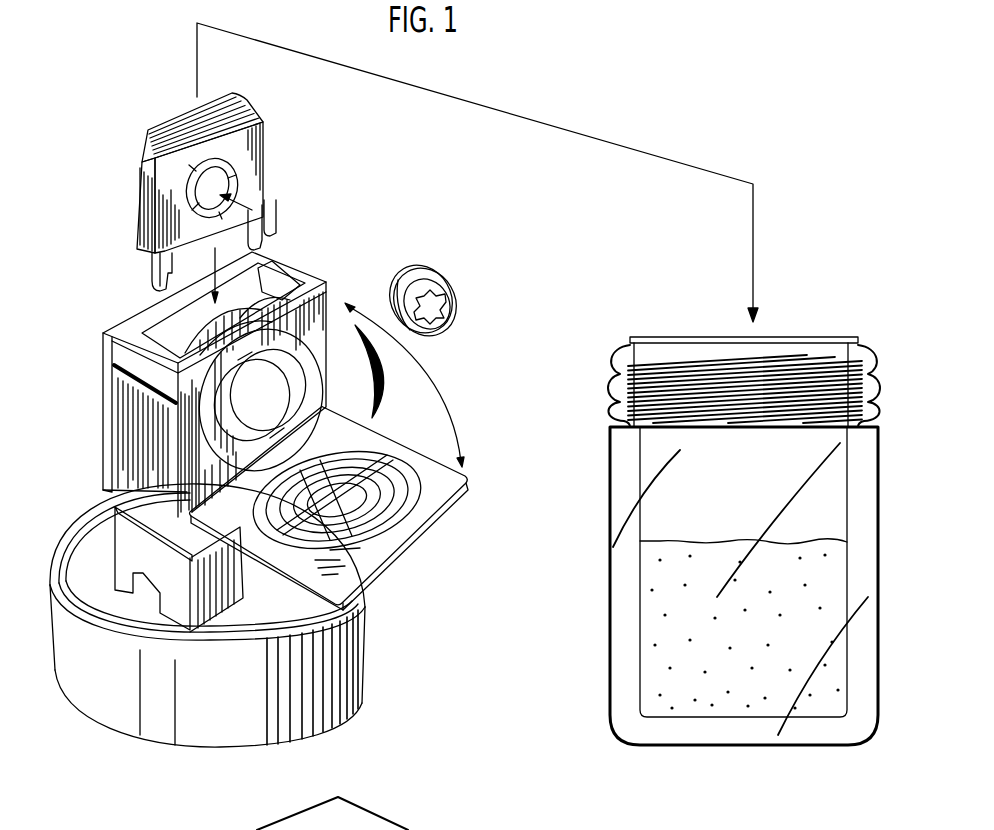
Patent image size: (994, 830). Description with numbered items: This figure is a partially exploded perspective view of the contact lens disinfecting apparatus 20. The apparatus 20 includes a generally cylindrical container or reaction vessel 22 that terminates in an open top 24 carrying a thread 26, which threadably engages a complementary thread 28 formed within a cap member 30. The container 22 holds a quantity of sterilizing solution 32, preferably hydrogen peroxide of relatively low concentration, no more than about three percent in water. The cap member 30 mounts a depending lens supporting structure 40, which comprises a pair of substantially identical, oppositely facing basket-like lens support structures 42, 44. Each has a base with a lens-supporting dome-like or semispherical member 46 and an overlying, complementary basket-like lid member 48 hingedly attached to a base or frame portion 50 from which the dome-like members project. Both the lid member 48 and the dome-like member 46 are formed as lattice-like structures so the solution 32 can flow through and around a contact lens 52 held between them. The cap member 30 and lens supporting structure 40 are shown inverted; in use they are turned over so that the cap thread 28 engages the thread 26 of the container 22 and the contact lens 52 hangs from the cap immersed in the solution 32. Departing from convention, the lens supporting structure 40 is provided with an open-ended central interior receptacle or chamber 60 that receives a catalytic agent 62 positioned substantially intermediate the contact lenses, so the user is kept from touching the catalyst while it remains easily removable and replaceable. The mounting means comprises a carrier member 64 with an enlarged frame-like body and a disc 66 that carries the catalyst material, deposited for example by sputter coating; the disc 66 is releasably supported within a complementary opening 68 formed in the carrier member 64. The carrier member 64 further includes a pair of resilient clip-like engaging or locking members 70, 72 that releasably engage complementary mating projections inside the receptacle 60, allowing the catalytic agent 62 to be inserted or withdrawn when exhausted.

The apparatus 20 is at (318, 745).
The container or reaction vessel 22 is at (713, 750).
The open top 24 is at (630, 337).
The thread 26 is at (612, 367).
The complementary thread 28 is at (375, 648).
The cap member 30 is at (240, 622).
The sterilizing solution 32 is at (675, 535).
The lens supporting structure 40 is at (90, 366).
The lens support structure 42 is at (446, 533).
The lens support structure 44 is at (99, 312).
The lens-supporting dome-like member 46 is at (292, 363).
The basket-like lid member 48 is at (457, 488).
The base or frame portion 50 is at (187, 492).
The contact lens 52 is at (387, 367).
The receptacle or chamber 60 is at (382, 282).
The catalytic agent 62 is at (213, 95).
The carrier member 64 is at (128, 138).
The disc 66 is at (455, 280).
The opening 68 is at (258, 195).
The resilient clip-like engaging member 70 is at (150, 283).
The resilient clip-like engaging member 72 is at (275, 214).